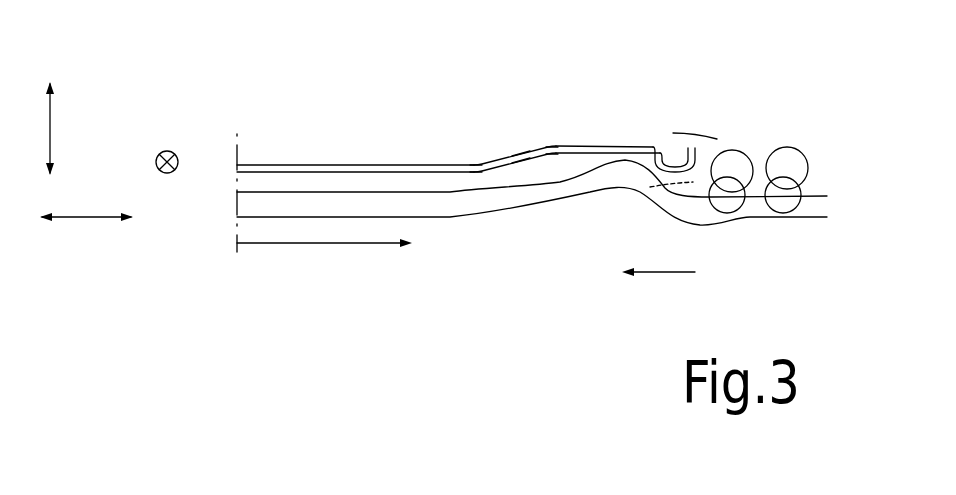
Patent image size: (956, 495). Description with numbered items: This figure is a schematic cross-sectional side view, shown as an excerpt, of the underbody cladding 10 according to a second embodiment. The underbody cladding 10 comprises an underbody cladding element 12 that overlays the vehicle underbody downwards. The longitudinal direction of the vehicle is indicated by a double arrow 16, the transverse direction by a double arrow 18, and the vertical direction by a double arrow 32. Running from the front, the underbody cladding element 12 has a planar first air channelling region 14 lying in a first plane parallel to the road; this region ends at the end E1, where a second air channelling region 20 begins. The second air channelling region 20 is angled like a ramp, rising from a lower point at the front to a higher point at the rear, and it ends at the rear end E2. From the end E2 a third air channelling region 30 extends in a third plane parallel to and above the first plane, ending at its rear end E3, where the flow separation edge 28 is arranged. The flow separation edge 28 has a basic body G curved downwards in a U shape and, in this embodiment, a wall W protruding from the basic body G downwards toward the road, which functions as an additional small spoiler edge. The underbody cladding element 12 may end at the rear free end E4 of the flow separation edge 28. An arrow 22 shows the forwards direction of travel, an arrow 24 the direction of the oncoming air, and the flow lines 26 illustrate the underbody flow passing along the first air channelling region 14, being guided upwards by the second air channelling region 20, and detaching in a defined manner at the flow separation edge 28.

The underbody cladding 10 is at (483, 205).
The underbody cladding element 12 is at (585, 127).
The first air channelling region 14 is at (322, 172).
The double arrow 16 is at (95, 219).
The double arrow 18 is at (168, 151).
The second air channelling region 20 is at (522, 154).
The arrow 22 is at (667, 274).
The arrow 24 is at (370, 245).
The flow lines 26 is at (551, 200).
The flow separation edge 28 is at (706, 174).
The third air channelling region 30 is at (638, 146).
The double arrow 32 is at (53, 127).
The front end E1 is at (478, 164).
The rear end E2 is at (552, 145).
The rear end E3 is at (659, 147).
The rear free end E4 is at (695, 148).
The basic body G is at (660, 178).
The wall W is at (672, 177).